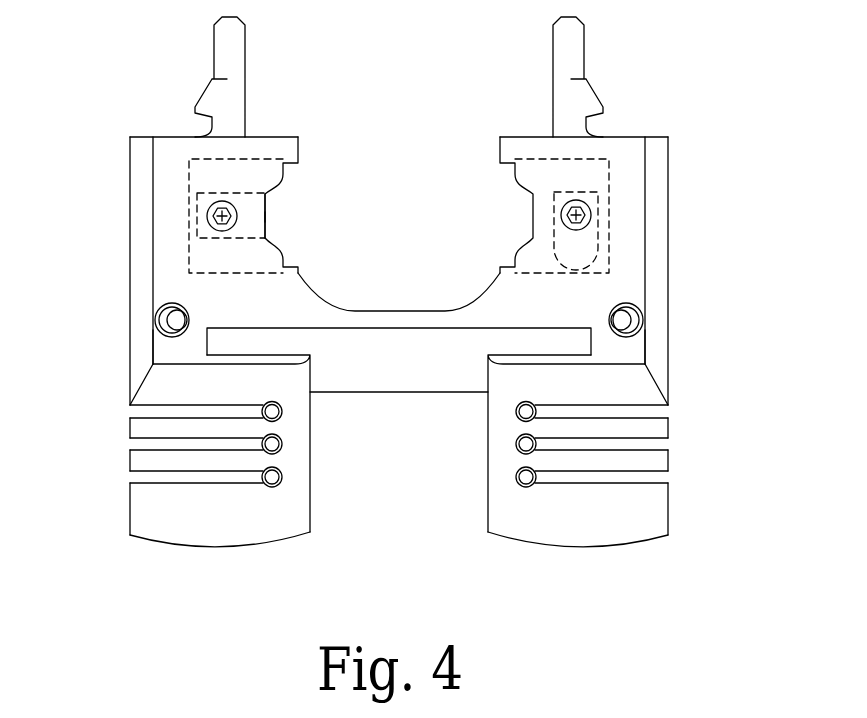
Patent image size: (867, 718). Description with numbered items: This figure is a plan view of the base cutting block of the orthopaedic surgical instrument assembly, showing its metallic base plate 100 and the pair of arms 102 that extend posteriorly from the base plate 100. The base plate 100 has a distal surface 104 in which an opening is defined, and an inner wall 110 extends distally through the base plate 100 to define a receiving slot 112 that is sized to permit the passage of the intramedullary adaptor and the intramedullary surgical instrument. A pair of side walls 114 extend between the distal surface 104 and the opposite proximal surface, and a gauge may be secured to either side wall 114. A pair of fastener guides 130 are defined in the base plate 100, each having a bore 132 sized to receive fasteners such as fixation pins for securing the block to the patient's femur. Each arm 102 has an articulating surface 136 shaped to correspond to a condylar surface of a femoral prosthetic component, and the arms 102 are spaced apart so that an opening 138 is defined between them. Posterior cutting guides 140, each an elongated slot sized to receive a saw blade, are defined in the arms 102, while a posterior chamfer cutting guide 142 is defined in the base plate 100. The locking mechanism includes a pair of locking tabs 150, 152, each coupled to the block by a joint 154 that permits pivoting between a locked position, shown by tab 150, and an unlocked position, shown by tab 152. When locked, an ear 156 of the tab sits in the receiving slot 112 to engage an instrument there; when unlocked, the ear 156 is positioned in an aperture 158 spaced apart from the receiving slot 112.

The base plate 100 is at (655, 186).
The arms 102 is at (268, 528).
The distal surface 104 is at (628, 237).
The inner wall 110 is at (306, 280).
The receiving slot 112 is at (387, 167).
The side walls 114 is at (135, 259).
The fastener guides 130 is at (153, 335).
The bore 132 is at (158, 312).
The articulating surface 136 is at (137, 508).
The opening 138 is at (390, 522).
The posterior cutting guides 140 is at (120, 439).
The posterior chamfer cutting guide 142 is at (425, 355).
The locking tab 150 is at (269, 201).
The locking tab 152 is at (608, 170).
The joint 154 is at (205, 213).
The ear 156 is at (269, 227).
The aperture 158 is at (258, 158).